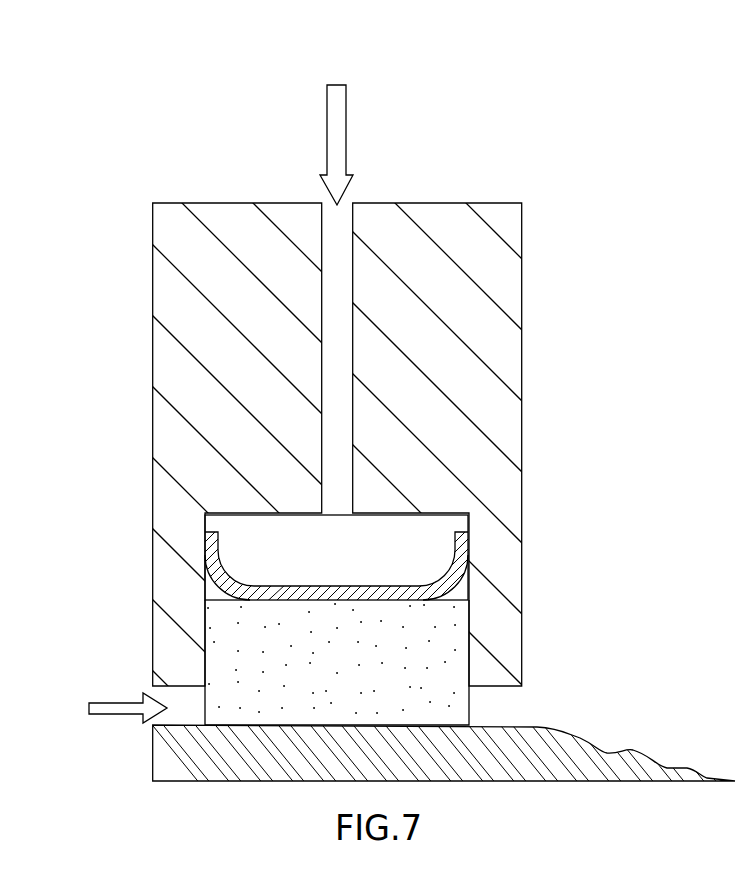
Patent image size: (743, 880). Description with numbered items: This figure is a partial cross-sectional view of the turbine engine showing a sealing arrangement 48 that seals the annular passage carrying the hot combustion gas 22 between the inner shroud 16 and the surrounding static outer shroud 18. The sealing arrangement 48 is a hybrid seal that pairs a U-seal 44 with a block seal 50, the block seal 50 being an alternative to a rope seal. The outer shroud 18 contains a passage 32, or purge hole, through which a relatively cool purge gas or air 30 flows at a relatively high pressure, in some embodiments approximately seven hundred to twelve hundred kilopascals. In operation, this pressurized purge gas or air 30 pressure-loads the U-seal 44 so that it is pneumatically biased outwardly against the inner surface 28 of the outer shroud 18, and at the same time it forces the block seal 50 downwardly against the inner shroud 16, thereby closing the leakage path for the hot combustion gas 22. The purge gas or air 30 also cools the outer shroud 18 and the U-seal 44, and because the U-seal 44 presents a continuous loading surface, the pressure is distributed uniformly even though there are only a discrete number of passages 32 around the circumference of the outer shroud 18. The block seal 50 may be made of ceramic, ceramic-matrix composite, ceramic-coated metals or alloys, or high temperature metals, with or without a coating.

The sealing arrangement 48 is at (192, 86).
The purge gas or air 30 is at (346, 127).
The outer shroud 18 is at (503, 440).
The passage 32 is at (335, 425).
The inner surface 28 is at (206, 517).
The U-seal 44 is at (374, 588).
The block seal 50 is at (470, 697).
The hot combustion gas 22 is at (135, 718).
The inner shroud 16 is at (243, 782).